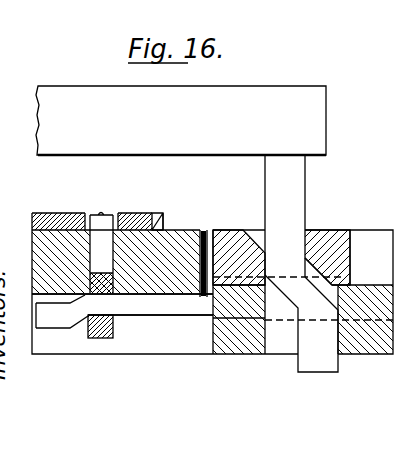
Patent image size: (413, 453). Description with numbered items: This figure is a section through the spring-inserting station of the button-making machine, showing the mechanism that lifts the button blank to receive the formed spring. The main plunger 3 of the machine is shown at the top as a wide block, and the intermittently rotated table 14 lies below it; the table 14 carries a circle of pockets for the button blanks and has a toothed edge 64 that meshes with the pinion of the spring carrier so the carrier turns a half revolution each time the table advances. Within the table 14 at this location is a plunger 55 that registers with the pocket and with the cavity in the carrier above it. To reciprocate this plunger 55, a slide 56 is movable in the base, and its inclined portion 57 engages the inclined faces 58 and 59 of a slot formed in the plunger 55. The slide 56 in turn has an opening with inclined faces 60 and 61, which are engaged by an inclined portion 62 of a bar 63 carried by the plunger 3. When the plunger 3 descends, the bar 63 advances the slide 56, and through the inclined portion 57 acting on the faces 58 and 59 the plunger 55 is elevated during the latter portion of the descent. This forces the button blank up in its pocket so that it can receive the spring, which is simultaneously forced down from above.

The plunger 3 is at (315, 123).
The table 14 is at (82, 198).
The plunger 55 is at (101, 243).
The slide 56 is at (122, 305).
The inclined portion 57 is at (75, 303).
The inclined face 58 is at (99, 289).
The inclined face 59 is at (113, 333).
The inclined face 60 is at (320, 262).
The inclined face 61 is at (252, 240).
The inclined portion 62 is at (295, 291).
The bar 63 is at (300, 189).
The toothed edge 64 is at (162, 216).